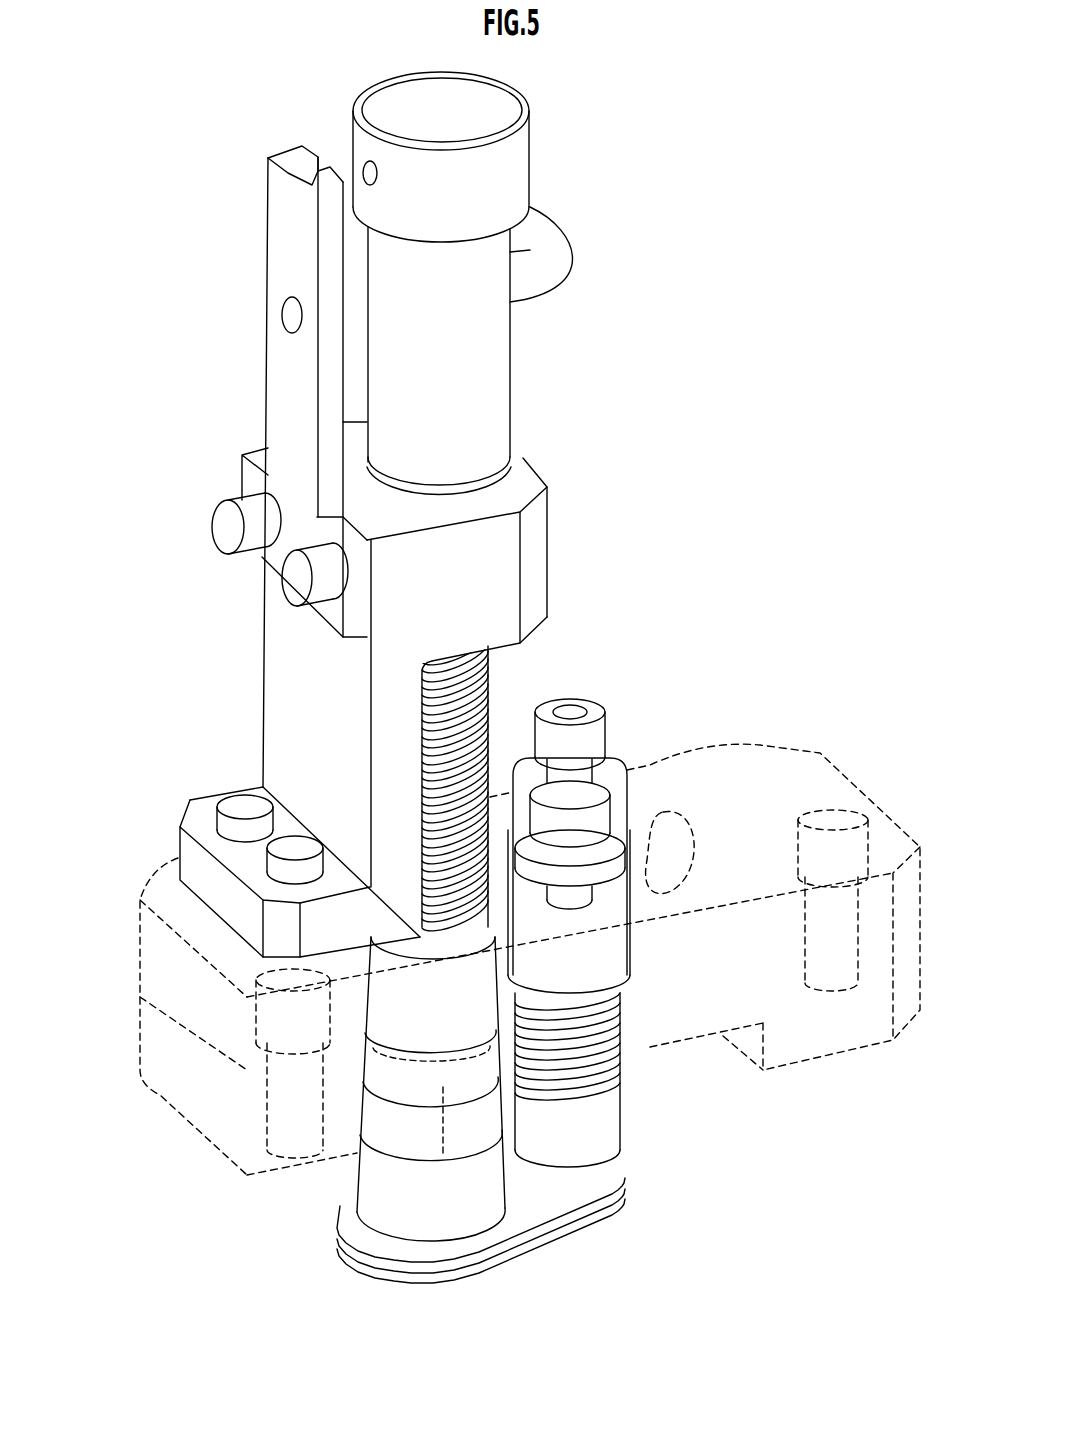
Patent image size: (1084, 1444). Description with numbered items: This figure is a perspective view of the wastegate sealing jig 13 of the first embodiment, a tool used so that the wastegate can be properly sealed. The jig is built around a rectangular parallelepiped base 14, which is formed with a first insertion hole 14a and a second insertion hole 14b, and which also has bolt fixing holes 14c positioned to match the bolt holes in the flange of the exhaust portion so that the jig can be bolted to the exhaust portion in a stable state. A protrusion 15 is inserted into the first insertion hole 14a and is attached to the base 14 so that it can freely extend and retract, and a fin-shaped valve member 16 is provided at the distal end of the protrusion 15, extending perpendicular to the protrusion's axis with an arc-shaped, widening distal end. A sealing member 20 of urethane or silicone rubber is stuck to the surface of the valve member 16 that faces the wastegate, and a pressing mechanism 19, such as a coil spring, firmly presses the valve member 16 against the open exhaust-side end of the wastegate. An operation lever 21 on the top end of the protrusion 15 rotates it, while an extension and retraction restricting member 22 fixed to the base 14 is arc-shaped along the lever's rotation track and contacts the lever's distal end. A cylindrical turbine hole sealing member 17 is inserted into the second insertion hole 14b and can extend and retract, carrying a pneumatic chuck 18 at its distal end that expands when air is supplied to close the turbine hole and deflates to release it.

The wastegate sealing jig 13 is at (717, 307).
The base 14 is at (165, 1105).
The first insertion hole 14a is at (625, 975).
The second insertion hole 14b is at (407, 935).
The bolt fixing holes 14c is at (172, 1030).
The protrusion 15 is at (627, 1073).
The fin-shaped valve member 16 is at (603, 1193).
The turbine hole sealing member 17 is at (399, 1311).
The pneumatic chuck 18 is at (366, 1180).
The pressing mechanism 19 is at (620, 1047).
The sealing member 20 is at (460, 1283).
The operation lever 21 is at (584, 700).
The extension and retraction restricting member 22 is at (677, 797).